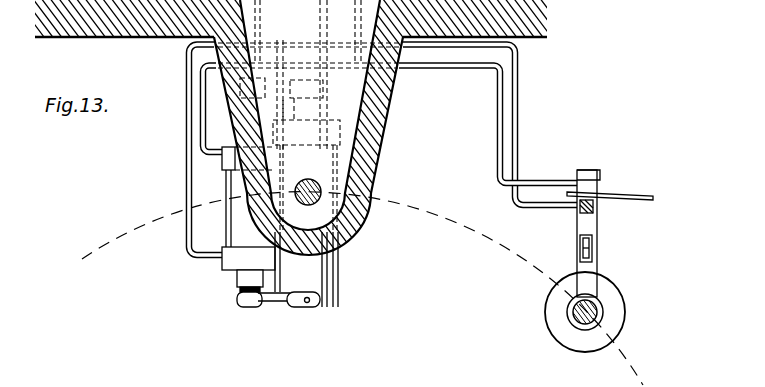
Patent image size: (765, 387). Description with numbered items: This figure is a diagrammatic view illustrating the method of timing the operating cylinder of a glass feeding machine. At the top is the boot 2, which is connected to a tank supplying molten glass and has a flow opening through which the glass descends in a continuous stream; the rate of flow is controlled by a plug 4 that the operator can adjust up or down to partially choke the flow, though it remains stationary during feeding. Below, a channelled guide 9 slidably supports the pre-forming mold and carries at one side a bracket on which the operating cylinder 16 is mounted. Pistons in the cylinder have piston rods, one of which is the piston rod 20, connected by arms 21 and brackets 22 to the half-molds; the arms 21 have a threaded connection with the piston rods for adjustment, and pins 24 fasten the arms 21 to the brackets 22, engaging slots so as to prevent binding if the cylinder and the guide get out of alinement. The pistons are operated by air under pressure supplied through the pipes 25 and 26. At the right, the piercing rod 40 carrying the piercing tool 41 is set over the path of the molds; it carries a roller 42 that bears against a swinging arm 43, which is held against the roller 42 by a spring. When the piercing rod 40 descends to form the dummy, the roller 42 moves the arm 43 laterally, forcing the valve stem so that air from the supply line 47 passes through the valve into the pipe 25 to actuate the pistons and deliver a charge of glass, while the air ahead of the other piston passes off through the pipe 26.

The boot 2 is at (382, 156).
The plug 4 is at (320, 192).
The channelled guide 9 is at (332, 270).
The operating cylinder 16 is at (227, 228).
The piston rod 20 is at (242, 290).
The arm 21 is at (281, 302).
The bracket 22 is at (318, 282).
The pin 24 is at (307, 303).
The pipe 25 is at (200, 132).
The pipe 26 is at (187, 160).
The piercing rod 40 is at (600, 305).
The piercing tool 41 is at (613, 290).
The roller 42 is at (596, 247).
The swinging arm 43 is at (578, 228).
The supply line 47 is at (643, 195).